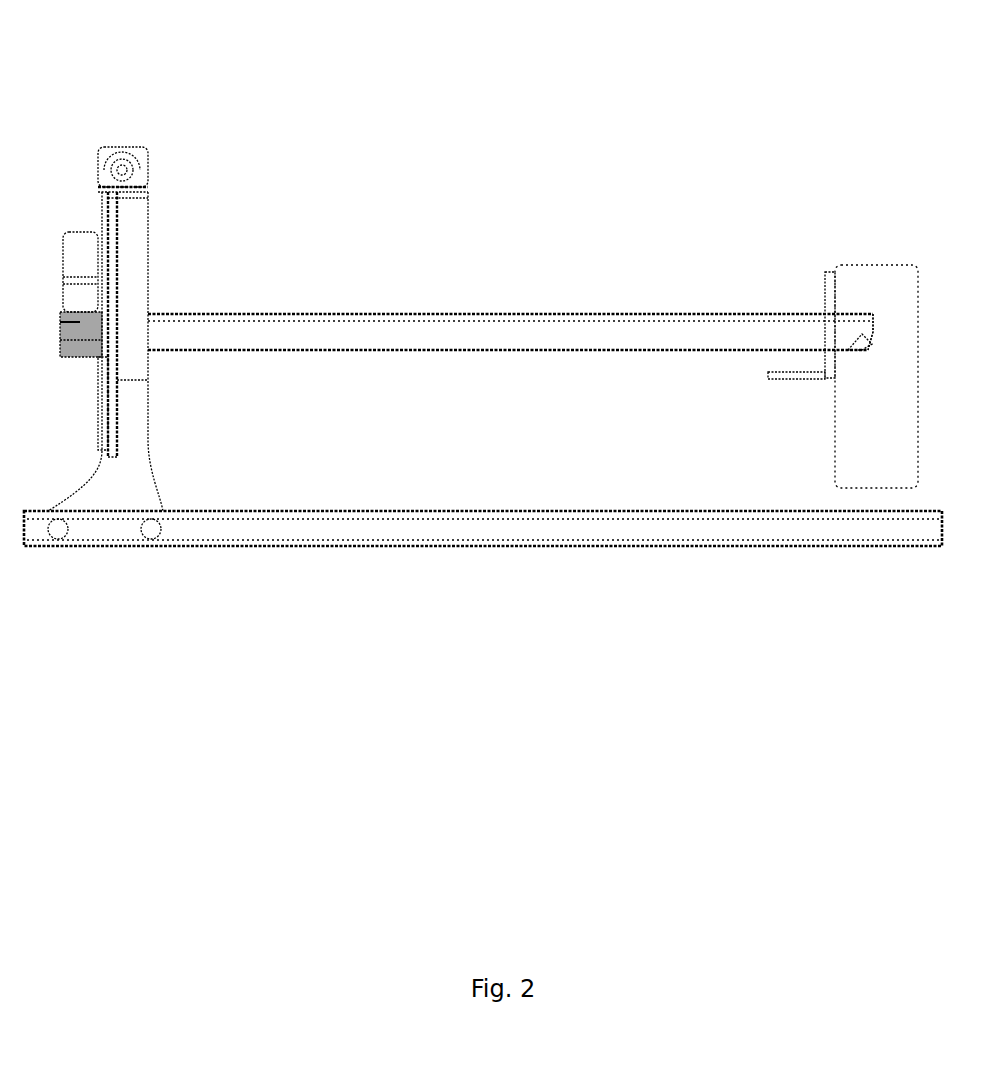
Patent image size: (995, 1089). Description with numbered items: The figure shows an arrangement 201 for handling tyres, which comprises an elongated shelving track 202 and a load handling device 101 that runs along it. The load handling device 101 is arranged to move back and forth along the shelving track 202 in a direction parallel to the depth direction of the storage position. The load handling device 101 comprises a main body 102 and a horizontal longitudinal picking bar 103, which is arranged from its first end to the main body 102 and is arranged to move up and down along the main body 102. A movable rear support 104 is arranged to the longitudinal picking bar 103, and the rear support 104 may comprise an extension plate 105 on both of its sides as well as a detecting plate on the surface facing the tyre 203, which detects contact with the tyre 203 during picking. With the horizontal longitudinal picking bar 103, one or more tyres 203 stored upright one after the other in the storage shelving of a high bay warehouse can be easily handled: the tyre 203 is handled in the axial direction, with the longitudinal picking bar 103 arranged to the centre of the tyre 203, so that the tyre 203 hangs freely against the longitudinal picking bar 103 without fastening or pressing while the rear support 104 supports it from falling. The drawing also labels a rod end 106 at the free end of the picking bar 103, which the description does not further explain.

The load handling device 101 is at (218, 218).
The main body 102 is at (143, 443).
The horizontal longitudinal picking bar 103 is at (512, 318).
The movable rear support 104 is at (827, 303).
The extension plate 105 is at (795, 380).
The rod end hook 106 is at (875, 313).
The arrangement 201 is at (615, 727).
The elongated shelving track 202 is at (440, 546).
The tyre 203 is at (857, 285).